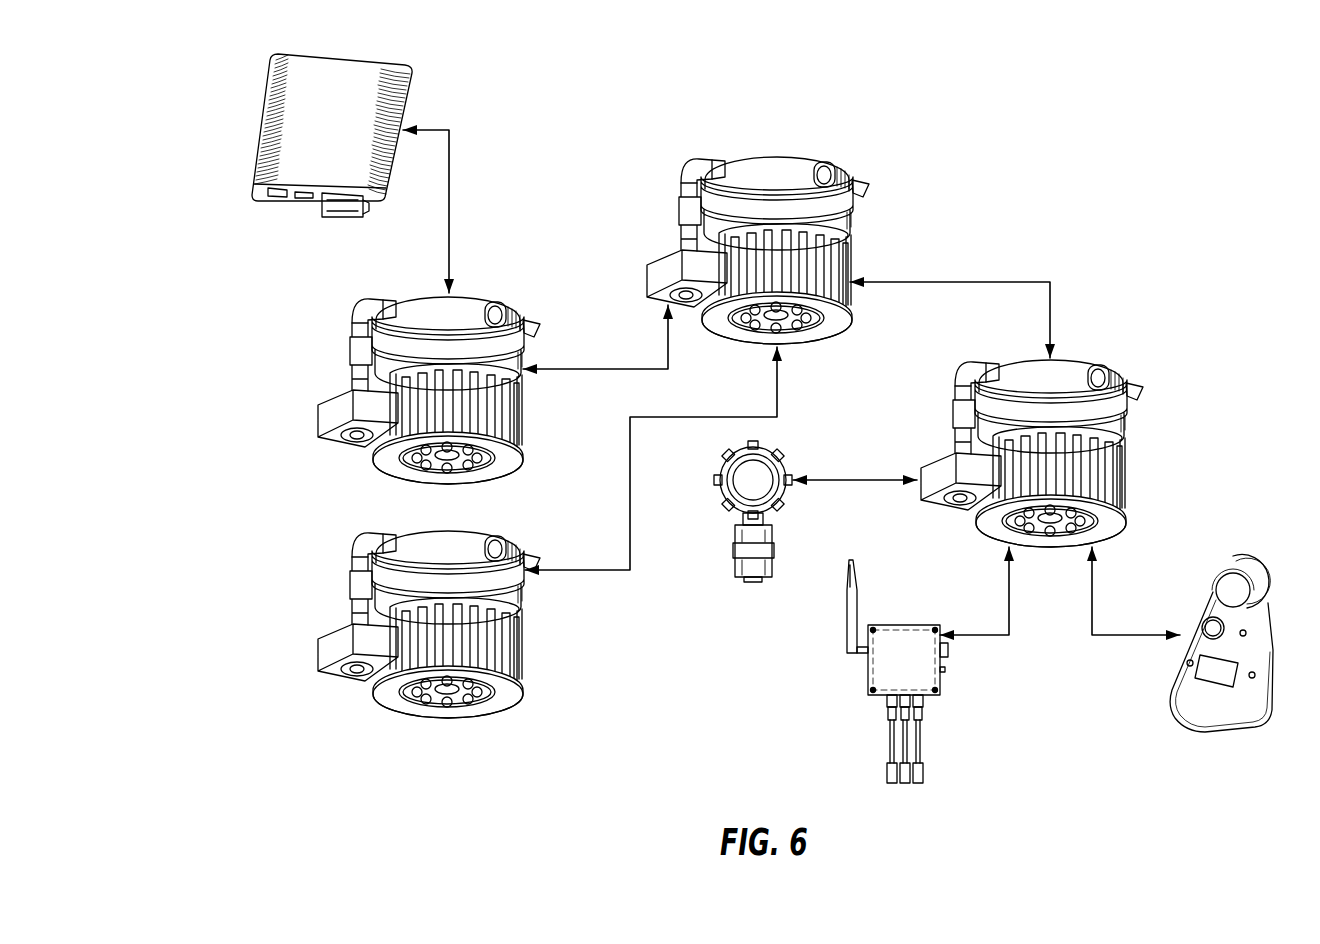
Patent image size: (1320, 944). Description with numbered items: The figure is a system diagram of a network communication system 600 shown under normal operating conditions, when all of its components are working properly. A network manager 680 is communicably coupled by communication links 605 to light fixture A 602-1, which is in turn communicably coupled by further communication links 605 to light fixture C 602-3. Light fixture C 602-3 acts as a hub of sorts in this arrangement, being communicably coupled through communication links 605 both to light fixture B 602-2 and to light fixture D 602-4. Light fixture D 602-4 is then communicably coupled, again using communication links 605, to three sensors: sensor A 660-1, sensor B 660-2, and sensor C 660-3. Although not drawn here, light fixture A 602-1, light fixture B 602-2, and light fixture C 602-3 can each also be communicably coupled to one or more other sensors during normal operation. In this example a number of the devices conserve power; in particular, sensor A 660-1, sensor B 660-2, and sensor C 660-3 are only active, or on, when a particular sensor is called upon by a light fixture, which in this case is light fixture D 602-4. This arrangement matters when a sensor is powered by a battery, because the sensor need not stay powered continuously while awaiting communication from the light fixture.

The network communication system 600 is at (1173, 98).
The light fixture A 602-1 is at (350, 353).
The light fixture B 602-2 is at (350, 588).
The light fixture C 602-3 is at (678, 210).
The light fixture D 602-4 is at (950, 420).
The communication links 605 is at (452, 215).
The sensor A 660-1 is at (753, 582).
The sensor B 660-2 is at (868, 670).
The sensor C 660-3 is at (1203, 730).
The network manager 680 is at (266, 120).